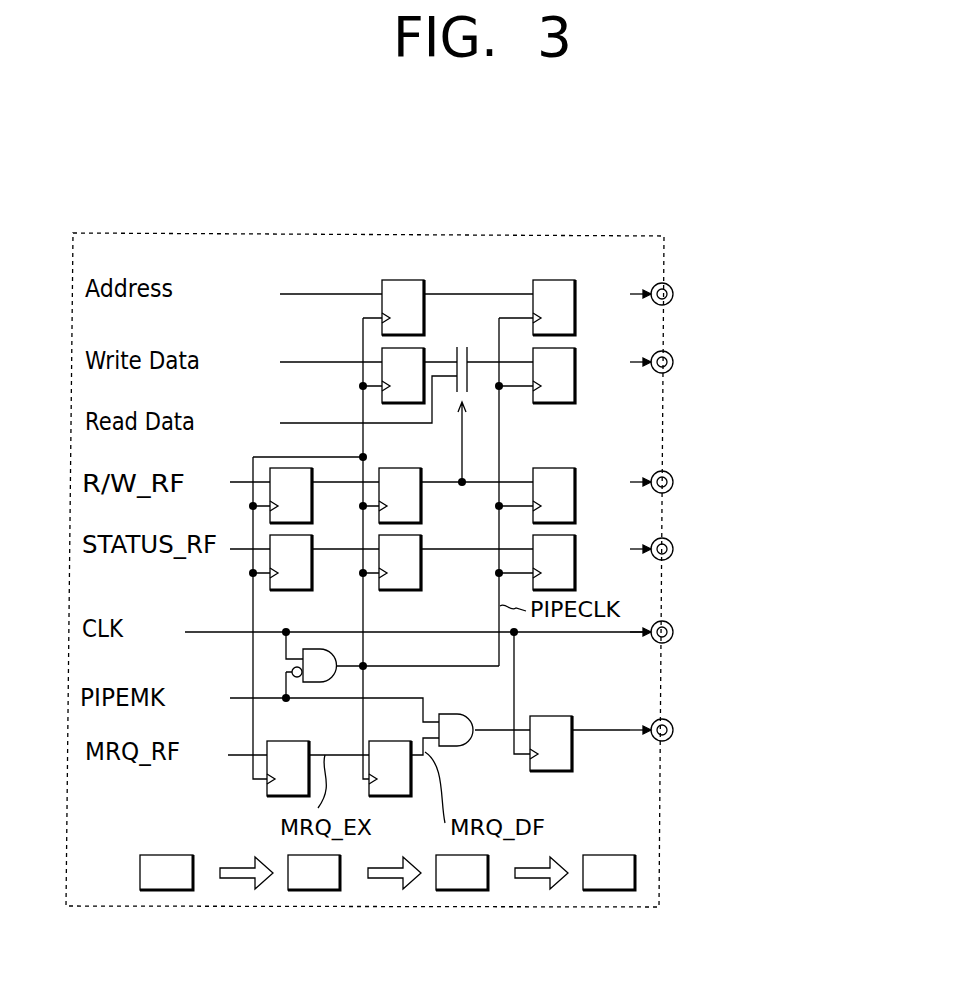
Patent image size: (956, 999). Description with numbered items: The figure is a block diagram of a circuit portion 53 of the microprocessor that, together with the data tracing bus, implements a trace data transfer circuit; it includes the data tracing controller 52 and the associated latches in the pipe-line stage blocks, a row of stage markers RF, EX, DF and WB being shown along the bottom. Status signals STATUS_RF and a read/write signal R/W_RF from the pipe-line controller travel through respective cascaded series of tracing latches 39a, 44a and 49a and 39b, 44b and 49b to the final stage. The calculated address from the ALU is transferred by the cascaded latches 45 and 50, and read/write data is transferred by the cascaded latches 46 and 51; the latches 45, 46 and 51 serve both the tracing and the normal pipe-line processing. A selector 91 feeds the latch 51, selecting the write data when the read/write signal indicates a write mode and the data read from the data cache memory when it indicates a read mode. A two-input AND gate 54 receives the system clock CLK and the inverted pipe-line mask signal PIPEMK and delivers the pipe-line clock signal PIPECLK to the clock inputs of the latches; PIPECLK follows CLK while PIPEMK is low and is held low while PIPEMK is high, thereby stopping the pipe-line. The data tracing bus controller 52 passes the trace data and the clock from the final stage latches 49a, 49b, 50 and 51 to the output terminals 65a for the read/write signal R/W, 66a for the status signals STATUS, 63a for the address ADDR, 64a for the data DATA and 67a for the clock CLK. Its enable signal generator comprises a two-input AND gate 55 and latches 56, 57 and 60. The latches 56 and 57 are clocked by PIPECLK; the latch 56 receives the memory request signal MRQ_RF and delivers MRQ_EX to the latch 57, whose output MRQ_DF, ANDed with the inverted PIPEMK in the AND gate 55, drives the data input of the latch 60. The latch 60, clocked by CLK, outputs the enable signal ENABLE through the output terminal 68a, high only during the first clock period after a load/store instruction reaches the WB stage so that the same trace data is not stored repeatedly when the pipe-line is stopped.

The tracing latch 39a is at (337, 490).
The tracing latch 39b is at (337, 557).
The tracing latch 44a is at (422, 510).
The tracing latch 44b is at (422, 575).
The latch 45 is at (424, 322).
The latch 46 is at (405, 403).
The final stage latch 49a is at (576, 510).
The final stage latch 49b is at (576, 575).
The latch 50 is at (576, 322).
The latch 51 is at (576, 392).
The data tracing bus controller 52 is at (635, 826).
The circuit portion 53 is at (538, 232).
The AND gate 54 is at (327, 652).
The AND gate 55 is at (468, 746).
The latch 56 is at (297, 740).
The latch 57 is at (395, 797).
The latch 60 is at (574, 758).
The output terminal 63a is at (674, 289).
The output terminal 64a is at (675, 358).
The output terminal 65a is at (675, 478).
The output terminal 66a is at (675, 546).
The output terminal 67a is at (675, 628).
The output terminal 68a is at (675, 726).
The selector 91 is at (468, 392).